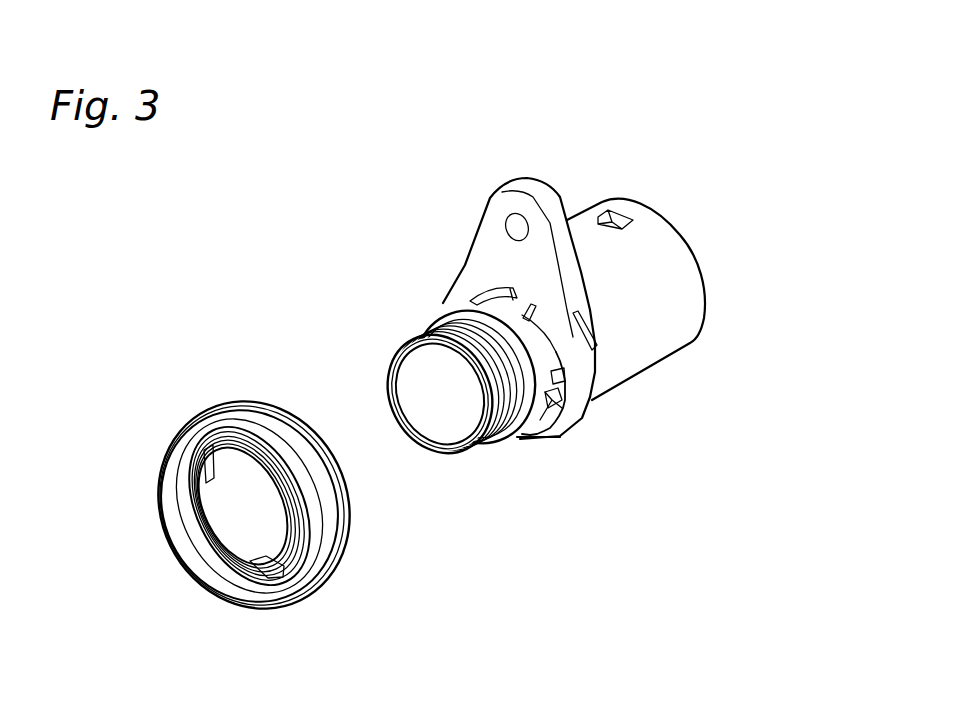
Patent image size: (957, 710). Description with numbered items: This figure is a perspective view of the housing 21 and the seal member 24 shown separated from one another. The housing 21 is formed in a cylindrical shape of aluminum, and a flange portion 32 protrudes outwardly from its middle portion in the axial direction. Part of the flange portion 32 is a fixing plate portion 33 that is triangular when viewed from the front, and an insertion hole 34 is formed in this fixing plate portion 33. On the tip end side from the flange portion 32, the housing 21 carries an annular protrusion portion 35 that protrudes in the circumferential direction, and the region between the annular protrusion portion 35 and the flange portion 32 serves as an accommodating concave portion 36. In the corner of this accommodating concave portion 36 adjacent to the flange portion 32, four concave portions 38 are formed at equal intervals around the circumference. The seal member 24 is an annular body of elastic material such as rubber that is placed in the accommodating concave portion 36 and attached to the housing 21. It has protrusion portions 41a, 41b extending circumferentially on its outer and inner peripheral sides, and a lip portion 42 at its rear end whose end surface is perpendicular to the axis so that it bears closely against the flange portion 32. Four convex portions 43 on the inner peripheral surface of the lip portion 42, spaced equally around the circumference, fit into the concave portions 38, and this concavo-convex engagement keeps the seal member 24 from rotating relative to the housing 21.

The housing 21 is at (542, 342).
The seal member 24 is at (265, 509).
The flange portion 32 is at (567, 437).
The fixing plate portion 33 is at (544, 283).
The insertion hole 34 is at (510, 213).
The annular protrusion portion 35 is at (510, 450).
The accommodating concave portion 36 is at (562, 400).
The concave portions 38 is at (523, 303).
The protrusion portion 41a is at (313, 587).
The protrusion portion 41b is at (213, 547).
The lip portion 42 is at (343, 567).
The convex portions 43 is at (212, 447).